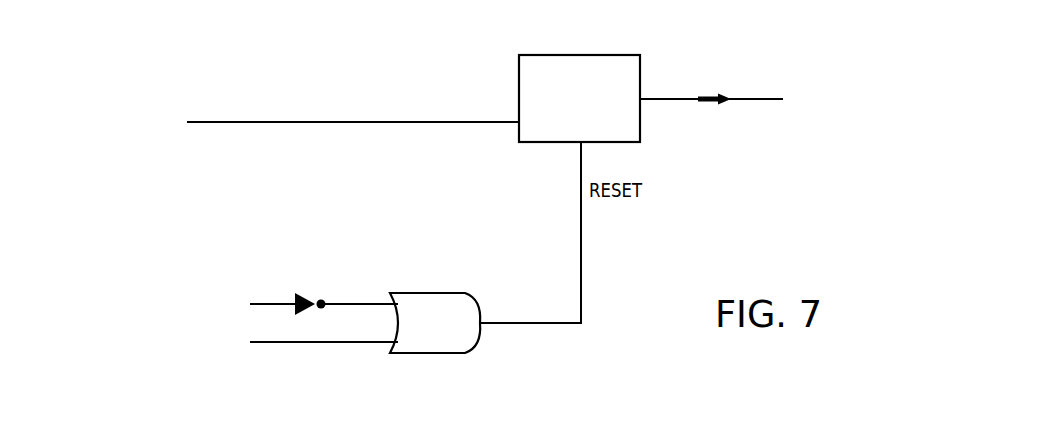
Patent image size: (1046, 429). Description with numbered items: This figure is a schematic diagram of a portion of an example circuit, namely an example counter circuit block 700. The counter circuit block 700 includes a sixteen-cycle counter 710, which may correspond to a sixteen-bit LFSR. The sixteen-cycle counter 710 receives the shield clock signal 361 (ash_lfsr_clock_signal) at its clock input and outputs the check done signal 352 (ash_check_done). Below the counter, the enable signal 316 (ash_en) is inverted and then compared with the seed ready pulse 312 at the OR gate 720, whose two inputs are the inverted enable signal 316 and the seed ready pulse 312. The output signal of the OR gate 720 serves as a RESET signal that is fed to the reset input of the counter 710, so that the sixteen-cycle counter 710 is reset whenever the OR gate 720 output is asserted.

The counter circuit block 700 is at (152, 32).
The 16-cycle counter 710 is at (519, 68).
The OR gate 720 is at (441, 292).
The shield clock signal 361 is at (132, 103).
The check done signal 352 is at (747, 99).
The enable signal 316 is at (205, 290).
The seed ready pulse 312 is at (150, 365).